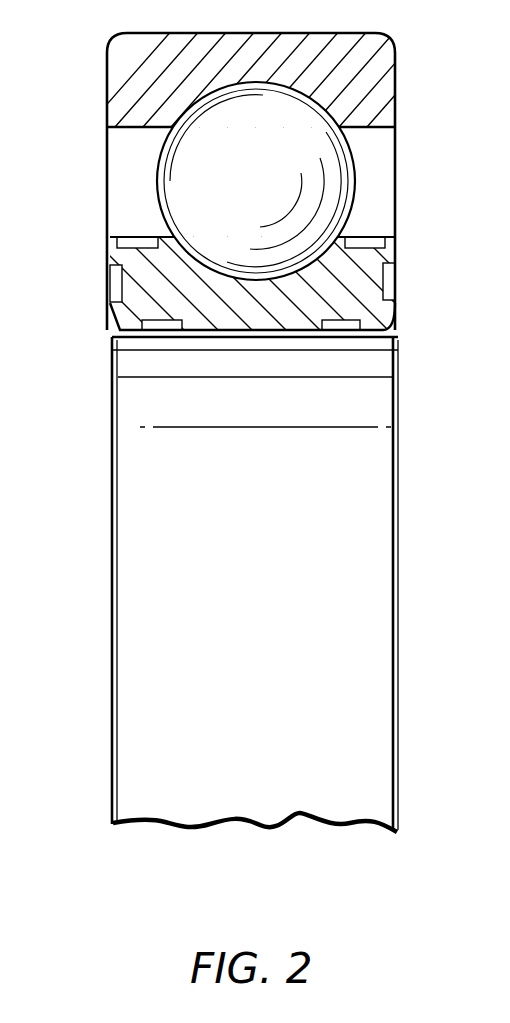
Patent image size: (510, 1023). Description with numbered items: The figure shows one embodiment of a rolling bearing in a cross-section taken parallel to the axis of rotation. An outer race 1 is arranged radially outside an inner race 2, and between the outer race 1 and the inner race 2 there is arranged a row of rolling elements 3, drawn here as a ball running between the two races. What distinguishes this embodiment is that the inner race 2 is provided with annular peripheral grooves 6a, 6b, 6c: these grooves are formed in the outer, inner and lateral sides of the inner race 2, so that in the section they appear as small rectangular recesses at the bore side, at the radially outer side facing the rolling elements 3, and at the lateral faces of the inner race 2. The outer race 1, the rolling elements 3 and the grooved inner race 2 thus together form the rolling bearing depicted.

The outer race 1 is at (374, 70).
The inner race 2 is at (396, 345).
The rolling elements 3 is at (330, 183).
The annular peripheral groove 6a is at (330, 331).
The annular peripheral groove 6b is at (110, 284).
The annular peripheral groove 6c is at (124, 243).